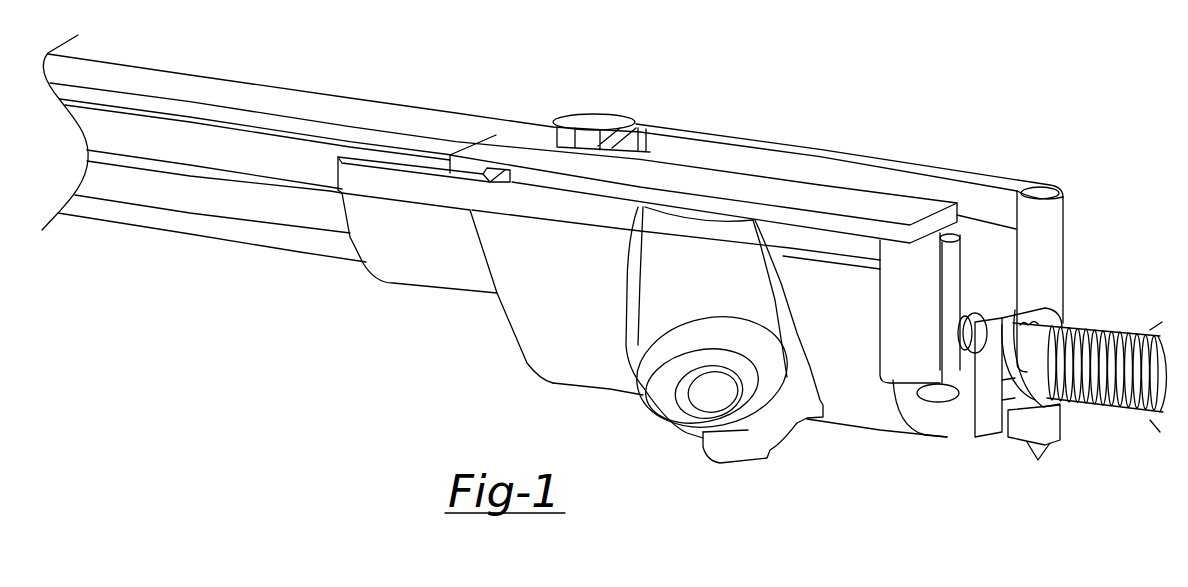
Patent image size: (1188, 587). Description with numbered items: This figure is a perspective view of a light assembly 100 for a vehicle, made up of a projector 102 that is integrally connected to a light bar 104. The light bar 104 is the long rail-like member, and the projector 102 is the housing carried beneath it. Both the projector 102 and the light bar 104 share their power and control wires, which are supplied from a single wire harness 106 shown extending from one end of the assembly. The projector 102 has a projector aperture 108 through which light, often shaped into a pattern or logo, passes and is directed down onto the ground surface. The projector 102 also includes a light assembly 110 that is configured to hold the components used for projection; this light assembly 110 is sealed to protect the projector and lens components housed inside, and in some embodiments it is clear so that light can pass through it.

The light assembly 100 is at (1041, 148).
The projector 102 is at (788, 126).
The light bar 104 is at (250, 66).
The wire harness 106 is at (1082, 335).
The projector aperture 108 is at (786, 463).
The light assembly 110 is at (585, 297).